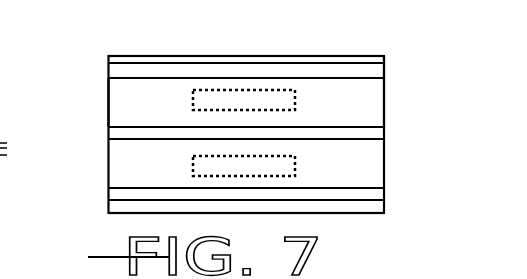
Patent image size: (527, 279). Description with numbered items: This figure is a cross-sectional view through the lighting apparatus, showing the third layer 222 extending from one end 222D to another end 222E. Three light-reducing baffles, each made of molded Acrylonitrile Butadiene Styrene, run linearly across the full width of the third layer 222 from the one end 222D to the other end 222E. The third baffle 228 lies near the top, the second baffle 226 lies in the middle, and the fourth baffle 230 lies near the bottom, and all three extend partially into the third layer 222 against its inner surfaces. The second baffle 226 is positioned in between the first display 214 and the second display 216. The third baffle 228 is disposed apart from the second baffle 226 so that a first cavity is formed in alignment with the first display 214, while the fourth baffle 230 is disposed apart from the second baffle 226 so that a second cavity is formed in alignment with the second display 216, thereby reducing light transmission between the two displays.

The third layer 222 is at (367, 162).
The one end of the third layer 222D is at (133, 93).
The another end of the third layer 222E is at (384, 88).
The third baffle 228 is at (165, 70).
The second baffle 226 is at (347, 132).
The fourth baffle 230 is at (122, 194).
The first display 214 is at (230, 88).
The second display 216 is at (296, 162).